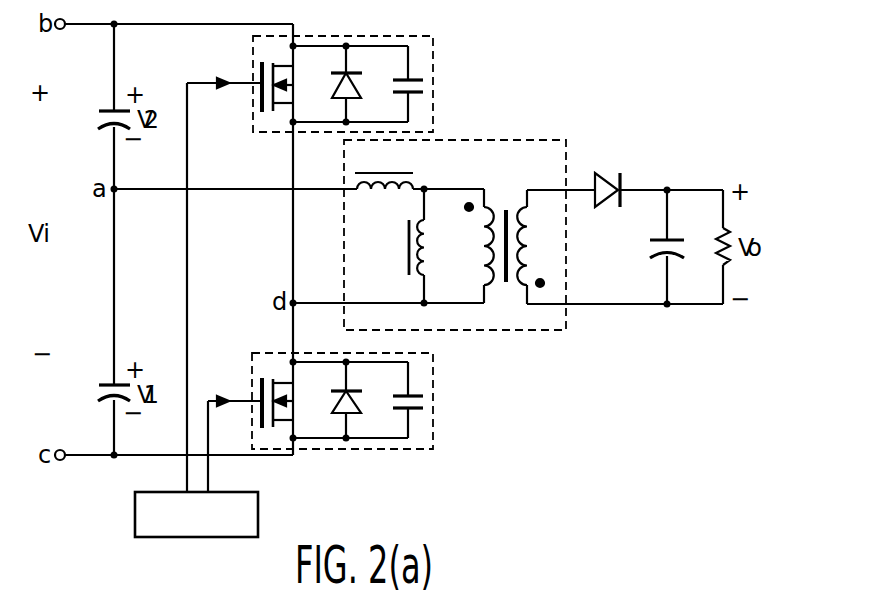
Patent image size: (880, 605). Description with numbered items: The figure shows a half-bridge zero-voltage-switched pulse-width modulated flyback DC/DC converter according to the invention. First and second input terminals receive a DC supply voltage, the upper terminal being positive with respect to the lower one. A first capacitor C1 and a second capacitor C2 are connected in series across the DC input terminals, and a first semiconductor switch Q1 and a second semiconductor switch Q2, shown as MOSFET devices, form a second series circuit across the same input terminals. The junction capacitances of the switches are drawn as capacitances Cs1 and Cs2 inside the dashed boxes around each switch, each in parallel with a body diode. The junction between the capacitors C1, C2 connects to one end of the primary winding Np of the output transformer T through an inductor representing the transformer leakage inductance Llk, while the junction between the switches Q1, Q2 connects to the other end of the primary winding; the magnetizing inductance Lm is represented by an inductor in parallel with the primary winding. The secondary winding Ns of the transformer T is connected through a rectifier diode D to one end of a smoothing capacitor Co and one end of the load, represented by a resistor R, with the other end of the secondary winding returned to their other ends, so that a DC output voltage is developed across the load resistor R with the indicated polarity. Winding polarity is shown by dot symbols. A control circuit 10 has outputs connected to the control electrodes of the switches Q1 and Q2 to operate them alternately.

The control circuit 10 is at (258, 497).
The first semiconductor switch Q1 is at (250, 394).
The second semiconductor switch Q2 is at (240, 77).
The first capacitor C1 is at (96, 395).
The second capacitor C2 is at (97, 120).
The junction capacitance of switch Q1 Cs1 is at (363, 84).
The junction capacitance of switch Q2 Cs2 is at (362, 401).
The output transformer T is at (445, 235).
The leakage inductance Llk is at (384, 167).
The magnetizing inductance Lm is at (398, 247).
The primary winding Np is at (473, 244).
The secondary winding Ns is at (537, 247).
The rectifier diode D is at (607, 176).
The smoothing capacitor Co is at (653, 247).
The load resistor R is at (715, 247).